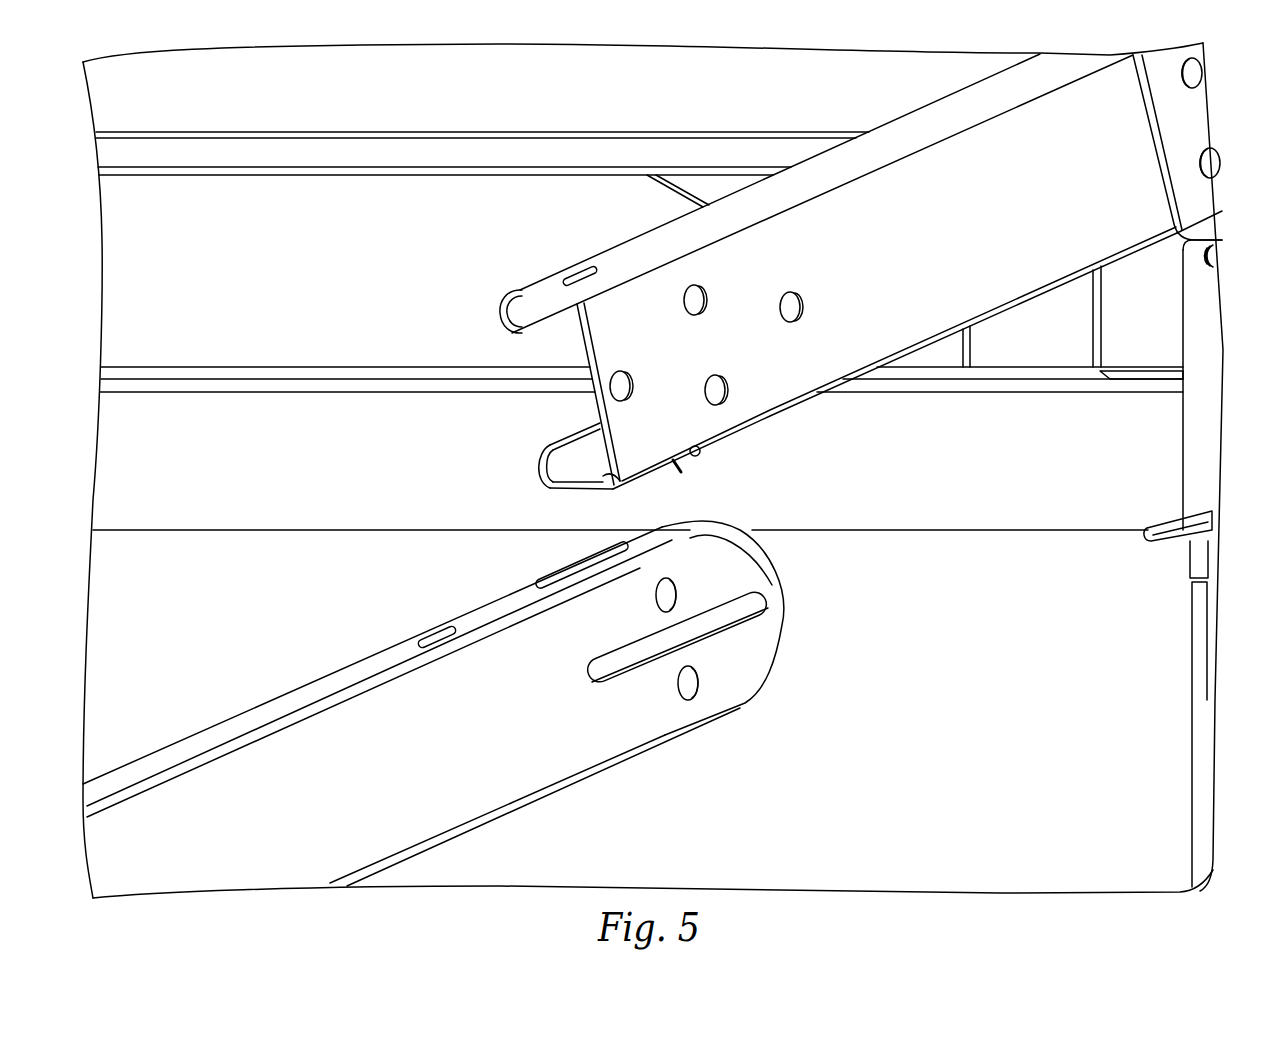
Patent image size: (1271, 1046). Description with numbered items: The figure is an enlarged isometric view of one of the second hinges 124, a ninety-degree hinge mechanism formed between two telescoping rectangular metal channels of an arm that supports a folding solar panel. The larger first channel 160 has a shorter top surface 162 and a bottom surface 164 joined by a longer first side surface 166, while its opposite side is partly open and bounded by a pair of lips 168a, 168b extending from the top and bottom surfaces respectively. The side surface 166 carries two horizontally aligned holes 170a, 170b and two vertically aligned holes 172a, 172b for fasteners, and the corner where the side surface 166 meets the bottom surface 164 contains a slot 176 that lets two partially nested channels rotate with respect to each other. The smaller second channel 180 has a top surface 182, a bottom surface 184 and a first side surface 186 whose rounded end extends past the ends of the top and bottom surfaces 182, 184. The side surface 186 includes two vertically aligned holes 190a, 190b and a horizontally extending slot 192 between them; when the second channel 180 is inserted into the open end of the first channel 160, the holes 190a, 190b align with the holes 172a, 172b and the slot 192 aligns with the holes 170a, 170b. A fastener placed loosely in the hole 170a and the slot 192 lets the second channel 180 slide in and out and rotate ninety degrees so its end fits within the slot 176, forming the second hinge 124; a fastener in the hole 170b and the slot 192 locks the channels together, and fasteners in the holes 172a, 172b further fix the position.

The second hinge 124 is at (815, 617).
The first channel 160 is at (813, 288).
The top surface 162 is at (613, 253).
The bottom surface 164 is at (548, 488).
The first side surface 166 is at (896, 289).
The lip 168a is at (505, 312).
The lip 168b is at (552, 438).
The horizontally aligned hole 170a is at (623, 372).
The horizontally aligned hole 170b is at (793, 293).
The vertically aligned hole 172a is at (706, 304).
The vertically aligned hole 172b is at (737, 391).
The slot 176 is at (682, 472).
The second channel 180 is at (433, 703).
The top surface 182 is at (478, 608).
The bottom surface 184 is at (597, 770).
The first side surface 186 is at (465, 750).
The vertically aligned hole 190a is at (675, 580).
The vertically aligned hole 190b is at (693, 669).
The horizontally extending slot 192 is at (595, 662).